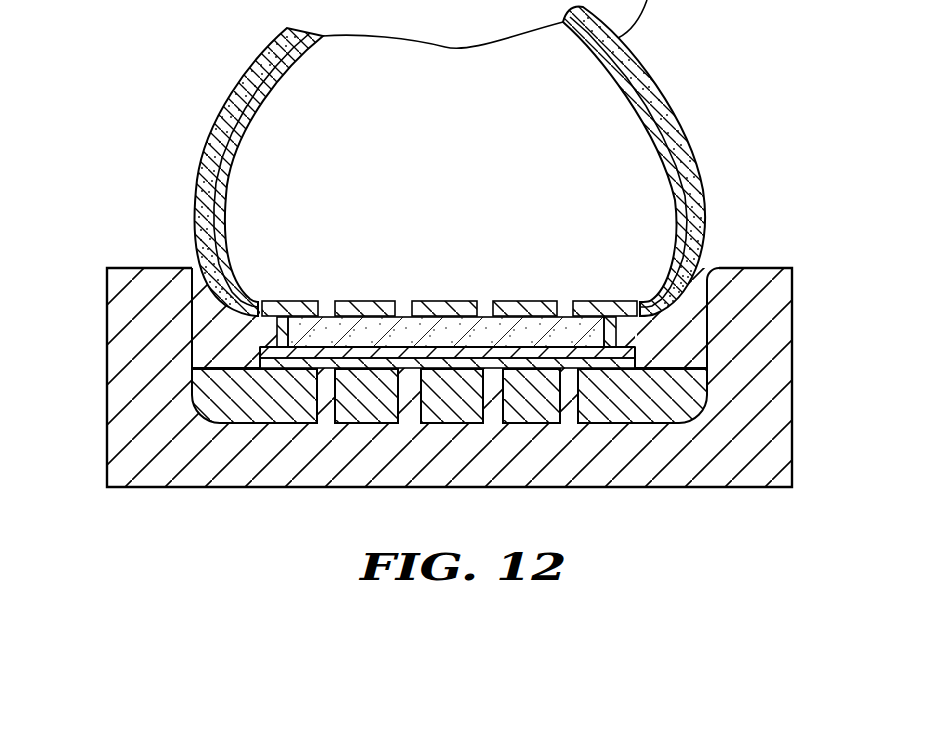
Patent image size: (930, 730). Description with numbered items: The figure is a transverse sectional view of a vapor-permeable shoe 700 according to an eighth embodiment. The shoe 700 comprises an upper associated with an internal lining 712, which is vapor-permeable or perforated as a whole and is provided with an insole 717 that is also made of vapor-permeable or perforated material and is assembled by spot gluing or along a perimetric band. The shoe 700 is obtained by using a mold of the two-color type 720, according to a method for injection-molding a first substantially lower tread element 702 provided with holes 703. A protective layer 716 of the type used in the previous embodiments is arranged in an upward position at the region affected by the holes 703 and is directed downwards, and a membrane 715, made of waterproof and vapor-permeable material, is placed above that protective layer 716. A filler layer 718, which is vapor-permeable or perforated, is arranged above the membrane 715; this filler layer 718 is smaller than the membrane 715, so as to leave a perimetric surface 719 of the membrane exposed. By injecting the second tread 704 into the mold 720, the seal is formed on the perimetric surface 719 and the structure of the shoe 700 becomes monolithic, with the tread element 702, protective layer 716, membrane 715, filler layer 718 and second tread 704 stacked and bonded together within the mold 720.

The vapor-permeable shoe 700 is at (175, 131).
The first substantially lower tread element 702 is at (257, 403).
The holes 703 is at (327, 402).
The second tread 704 is at (215, 308).
The internal lining 712 is at (622, 83).
The membrane 715 is at (358, 360).
The protective layer 716 is at (435, 365).
The insole 717 is at (522, 315).
The filler layer 718 is at (585, 320).
The perimetric surface 719 is at (280, 346).
The two-color mold 720 is at (790, 403).